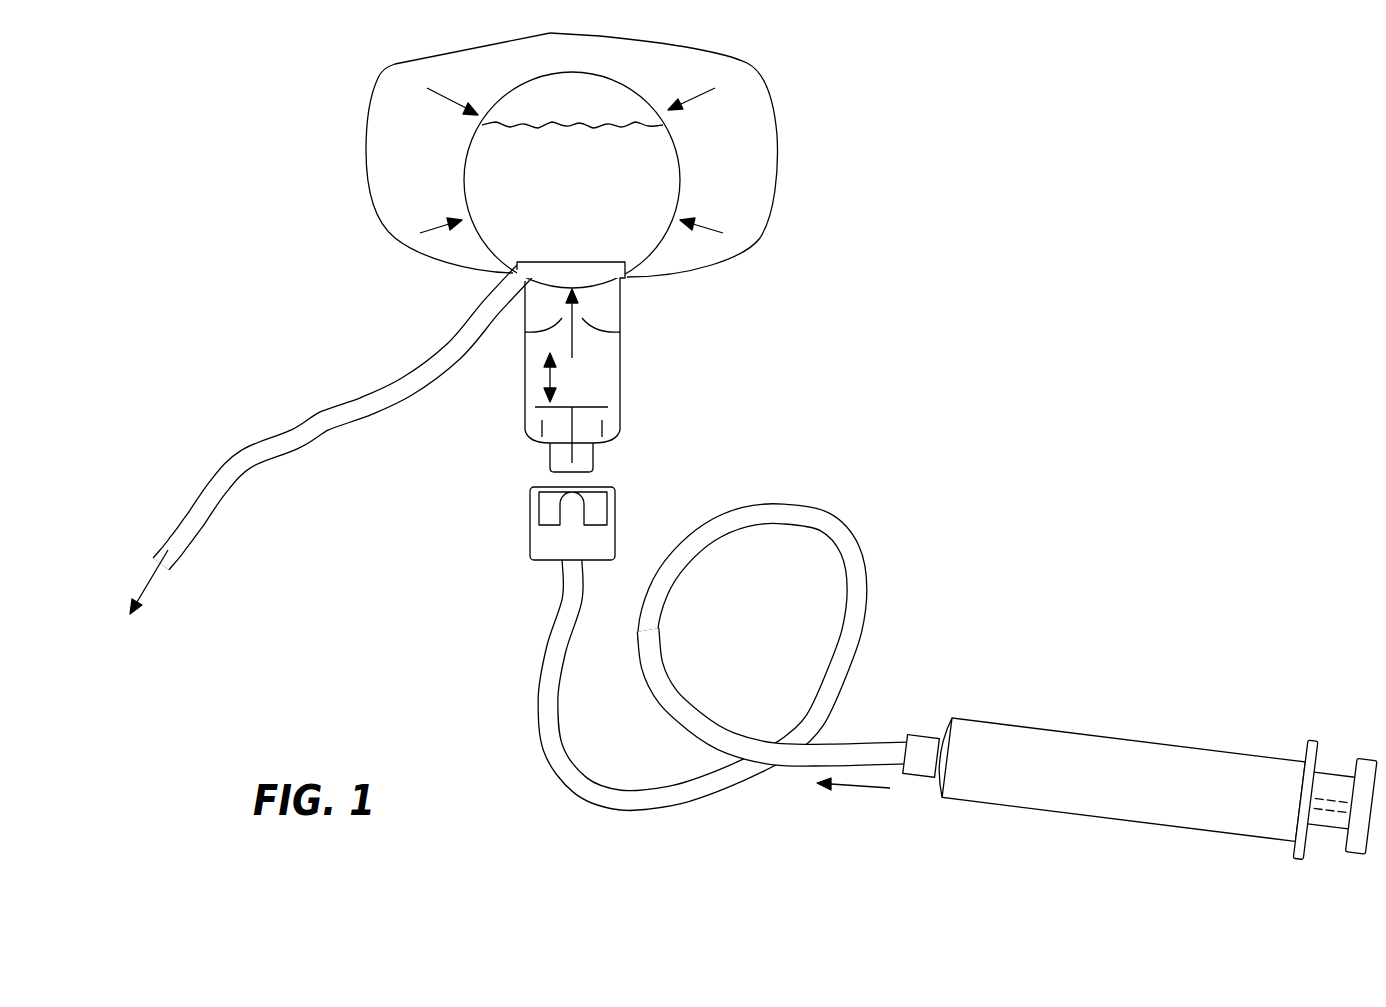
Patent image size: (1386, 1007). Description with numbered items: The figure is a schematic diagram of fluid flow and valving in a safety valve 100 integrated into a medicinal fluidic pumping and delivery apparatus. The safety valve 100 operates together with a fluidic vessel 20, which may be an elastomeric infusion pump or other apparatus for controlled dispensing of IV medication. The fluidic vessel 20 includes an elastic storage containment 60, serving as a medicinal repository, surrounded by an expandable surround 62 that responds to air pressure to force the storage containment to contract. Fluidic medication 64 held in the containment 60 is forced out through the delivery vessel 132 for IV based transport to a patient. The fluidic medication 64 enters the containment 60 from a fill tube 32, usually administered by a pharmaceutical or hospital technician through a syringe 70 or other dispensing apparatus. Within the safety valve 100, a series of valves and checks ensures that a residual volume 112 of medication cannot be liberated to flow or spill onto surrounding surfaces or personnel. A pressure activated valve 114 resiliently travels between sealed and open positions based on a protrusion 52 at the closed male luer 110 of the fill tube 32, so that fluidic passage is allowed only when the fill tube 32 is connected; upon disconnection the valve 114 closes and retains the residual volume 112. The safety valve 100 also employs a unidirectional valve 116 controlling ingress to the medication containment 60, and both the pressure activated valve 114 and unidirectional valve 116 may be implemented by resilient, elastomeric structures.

The fluidic vessel 20 is at (372, 108).
The elastic storage containment 60 is at (677, 148).
The expandable surround 62 is at (372, 202).
The fluidic medication 64 is at (587, 196).
The safety valve 100 is at (620, 303).
The residual volume 112 is at (588, 382).
The pressure activated valve 114 is at (573, 418).
The unidirectional valve 116 is at (548, 342).
The delivery vessel 132 is at (238, 448).
The protrusion 52 is at (570, 503).
The closed male luer 110 is at (530, 540).
The fill tube 32 is at (868, 600).
The syringe 70 is at (1120, 745).